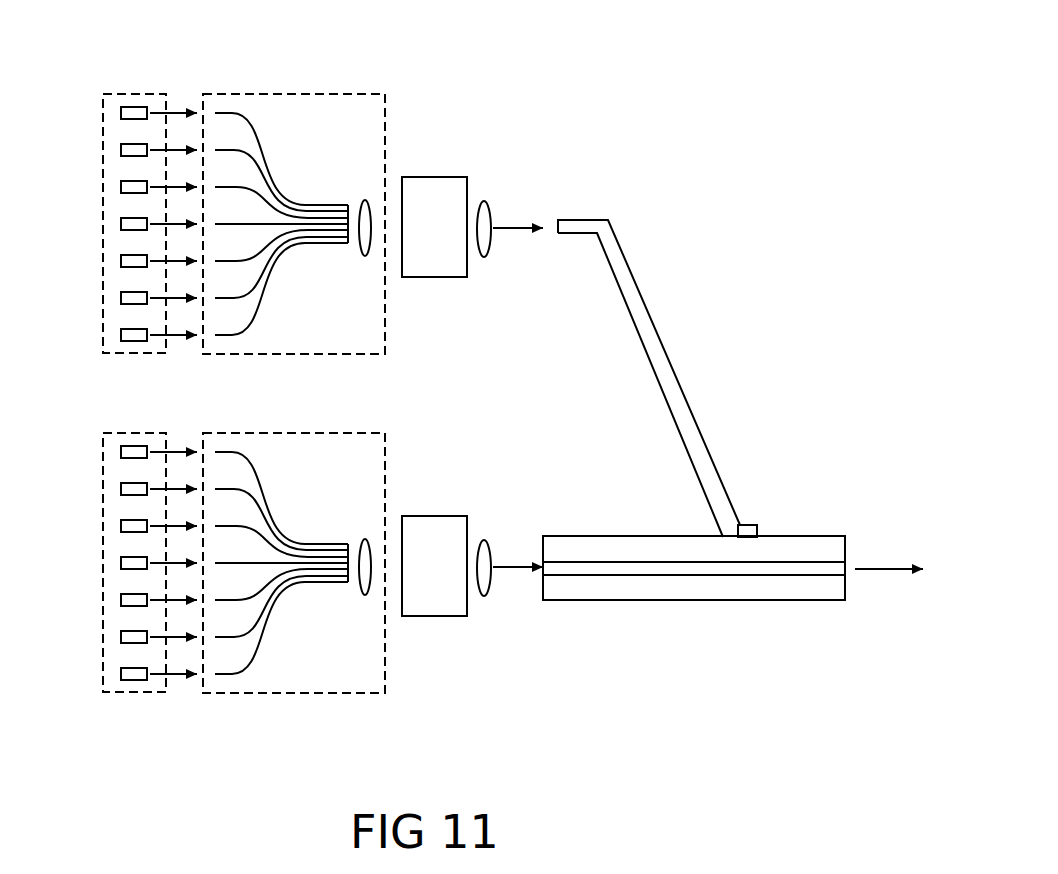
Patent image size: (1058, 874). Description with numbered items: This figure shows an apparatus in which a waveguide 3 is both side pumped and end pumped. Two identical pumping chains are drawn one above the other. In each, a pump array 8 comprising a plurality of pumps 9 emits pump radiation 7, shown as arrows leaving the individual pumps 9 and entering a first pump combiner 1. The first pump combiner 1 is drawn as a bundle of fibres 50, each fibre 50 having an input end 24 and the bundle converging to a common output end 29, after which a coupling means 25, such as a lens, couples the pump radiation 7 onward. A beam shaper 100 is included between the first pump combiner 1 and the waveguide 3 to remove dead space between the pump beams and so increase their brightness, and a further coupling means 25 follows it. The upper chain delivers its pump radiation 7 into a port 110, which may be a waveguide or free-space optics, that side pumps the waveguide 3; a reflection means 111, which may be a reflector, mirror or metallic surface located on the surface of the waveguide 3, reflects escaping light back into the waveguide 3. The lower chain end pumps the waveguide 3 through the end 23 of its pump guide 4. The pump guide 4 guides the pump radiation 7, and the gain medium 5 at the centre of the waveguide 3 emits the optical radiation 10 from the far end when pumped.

The first pump combiner 1 is at (310, 92).
The waveguide 3 is at (680, 541).
The pump guide 4 is at (589, 535).
The gain medium 5 is at (750, 560).
The pump radiation 7 is at (172, 92).
The pump array 8 is at (118, 80).
The pump 9 is at (121, 113).
The optical radiation 10 is at (886, 567).
The end of pump guide 23 is at (543, 535).
The end of first pump waveguide 24 is at (281, 350).
The coupling means 25 is at (363, 202).
The end of array of first pump waveguides 29 is at (345, 247).
The fibre 50 is at (247, 160).
The beam shaper 100 is at (467, 277).
The port 110 is at (667, 349).
The reflection means 111 is at (749, 523).